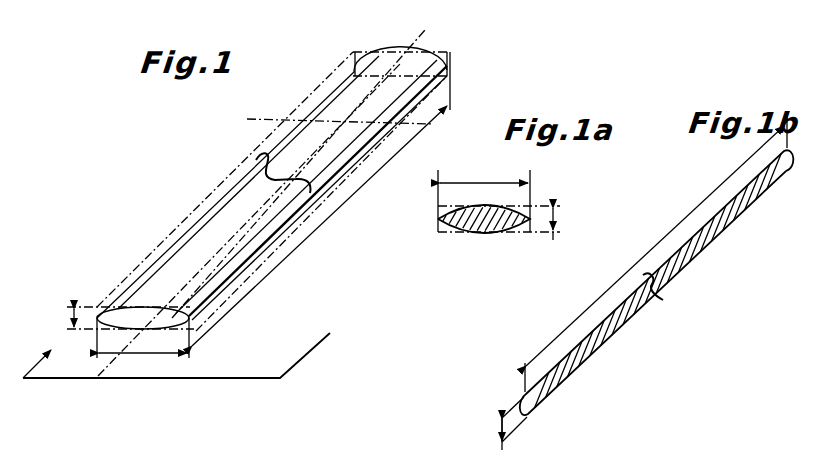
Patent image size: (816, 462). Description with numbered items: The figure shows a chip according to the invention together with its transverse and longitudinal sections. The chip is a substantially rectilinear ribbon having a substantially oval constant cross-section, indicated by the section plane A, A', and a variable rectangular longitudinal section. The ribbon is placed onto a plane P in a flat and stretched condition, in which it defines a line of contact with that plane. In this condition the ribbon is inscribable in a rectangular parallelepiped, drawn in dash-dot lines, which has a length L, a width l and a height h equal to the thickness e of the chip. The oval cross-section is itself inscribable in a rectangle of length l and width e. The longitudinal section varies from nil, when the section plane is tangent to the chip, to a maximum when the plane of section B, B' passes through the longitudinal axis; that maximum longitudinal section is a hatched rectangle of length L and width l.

In FIG. 1, the transverse section plane A is at (339, 114).
In FIG. 1, the longitudinal section plane B is at (281, 168).
In FIG. 1, the length L is at (321, 199).
In FIG. 1B, the length L is at (656, 254).
In FIG. 1, the width l is at (143, 338).
In FIG. 1A, the width l is at (484, 195).
In FIG. 1, the thickness e is at (124, 316).
In FIG. 1B, the thickness e is at (506, 423).
In FIG. 1A, the height h is at (574, 220).
In FIG. 1, the plane P is at (176, 355).